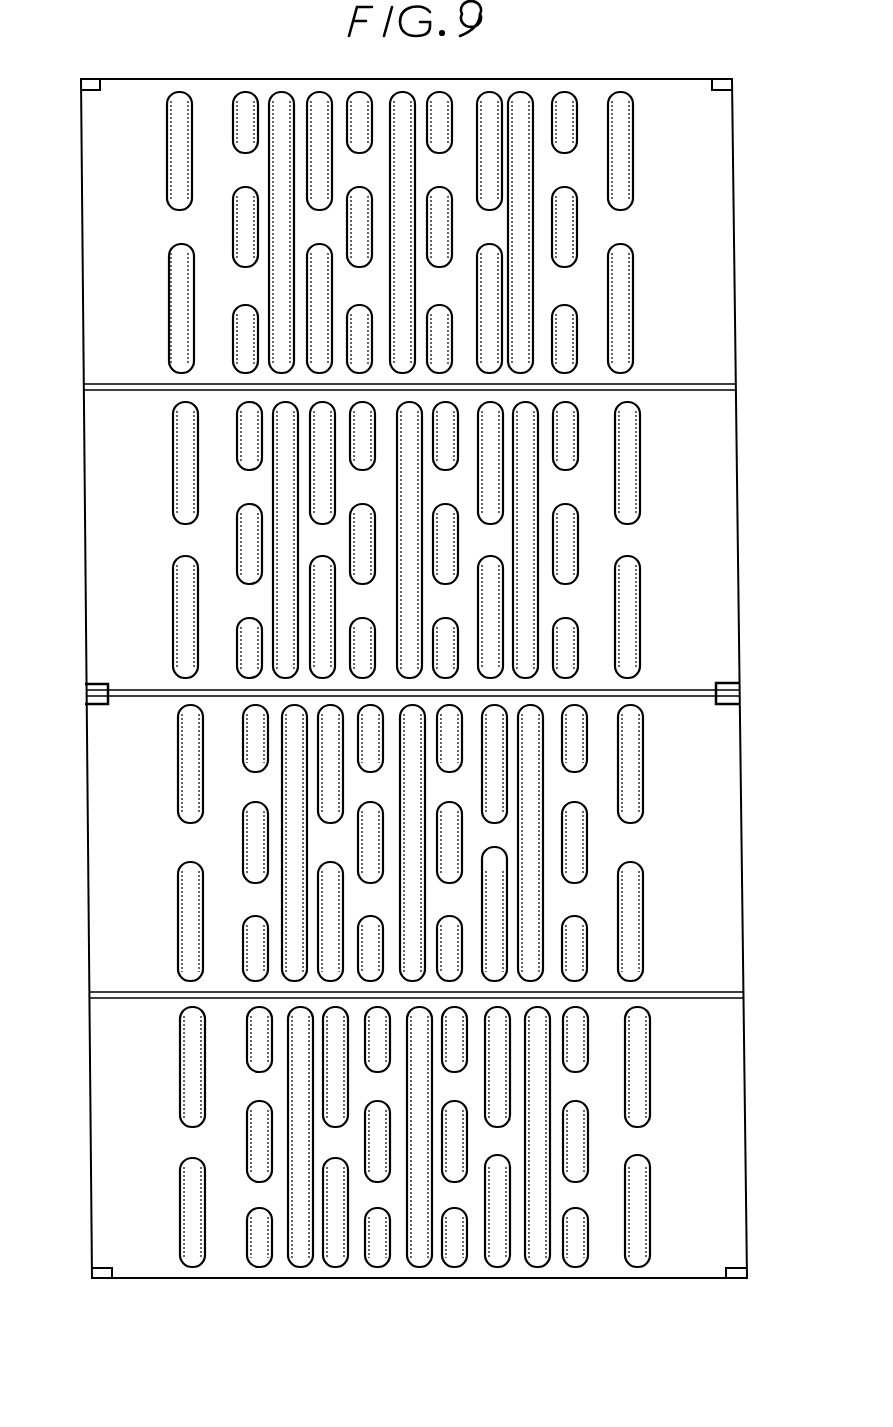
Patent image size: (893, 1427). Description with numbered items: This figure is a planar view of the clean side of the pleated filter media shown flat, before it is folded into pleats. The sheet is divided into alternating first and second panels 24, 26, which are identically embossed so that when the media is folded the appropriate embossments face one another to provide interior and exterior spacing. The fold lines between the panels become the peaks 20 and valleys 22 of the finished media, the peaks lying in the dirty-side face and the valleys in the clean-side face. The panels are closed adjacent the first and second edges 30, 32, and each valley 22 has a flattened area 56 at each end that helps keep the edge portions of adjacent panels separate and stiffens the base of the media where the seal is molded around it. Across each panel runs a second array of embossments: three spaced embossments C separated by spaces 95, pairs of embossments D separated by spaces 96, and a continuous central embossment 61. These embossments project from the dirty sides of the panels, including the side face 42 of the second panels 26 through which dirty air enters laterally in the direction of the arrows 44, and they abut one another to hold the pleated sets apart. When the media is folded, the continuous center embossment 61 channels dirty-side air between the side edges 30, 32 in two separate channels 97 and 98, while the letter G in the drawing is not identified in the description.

The peaks 20 is at (126, 386).
The valleys 22 is at (126, 692).
The first panels 24 is at (702, 540).
The second panels 26 is at (692, 285).
The first edge 30 is at (736, 572).
The second edge 32 is at (86, 572).
The side filter media face 42 is at (716, 288).
The arrows 44 is at (718, 488).
The flattened area 56 is at (92, 82).
The continuous central embossment 61 is at (405, 104).
The spaces 95 is at (593, 1206).
The spaces 96 is at (330, 240).
The channel 97 is at (215, 105).
The channel 98 is at (590, 104).
The spaced embossments C is at (240, 124).
The pairs of embossments D is at (320, 164).
The gap dimension G is at (410, 790).